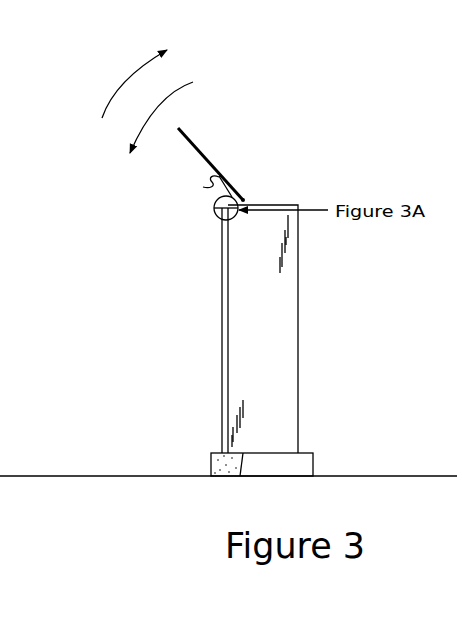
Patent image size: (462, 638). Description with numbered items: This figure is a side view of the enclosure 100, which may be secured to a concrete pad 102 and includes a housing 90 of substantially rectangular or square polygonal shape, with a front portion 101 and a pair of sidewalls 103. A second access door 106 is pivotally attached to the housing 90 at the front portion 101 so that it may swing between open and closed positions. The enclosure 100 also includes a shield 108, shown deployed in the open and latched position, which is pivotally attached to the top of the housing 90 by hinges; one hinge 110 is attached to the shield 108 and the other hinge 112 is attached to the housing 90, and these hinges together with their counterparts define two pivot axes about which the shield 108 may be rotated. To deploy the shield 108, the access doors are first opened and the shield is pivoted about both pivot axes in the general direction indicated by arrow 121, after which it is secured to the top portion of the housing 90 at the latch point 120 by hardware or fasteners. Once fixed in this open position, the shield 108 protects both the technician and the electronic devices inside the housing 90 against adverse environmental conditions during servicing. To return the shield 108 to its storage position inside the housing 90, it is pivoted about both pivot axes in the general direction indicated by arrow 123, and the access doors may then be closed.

The housing 90 is at (298, 373).
The enclosure 100 is at (348, 122).
The front portion 101 is at (197, 368).
The concrete pad 102 is at (303, 463).
The sidewalls 103 is at (272, 339).
The second access door 106 is at (220, 293).
The shield 108 is at (195, 142).
The hinge 110 is at (203, 187).
The hinge 112 is at (215, 212).
The latch point 120 is at (246, 196).
The arrow 121 is at (123, 72).
The arrow 123 is at (152, 105).